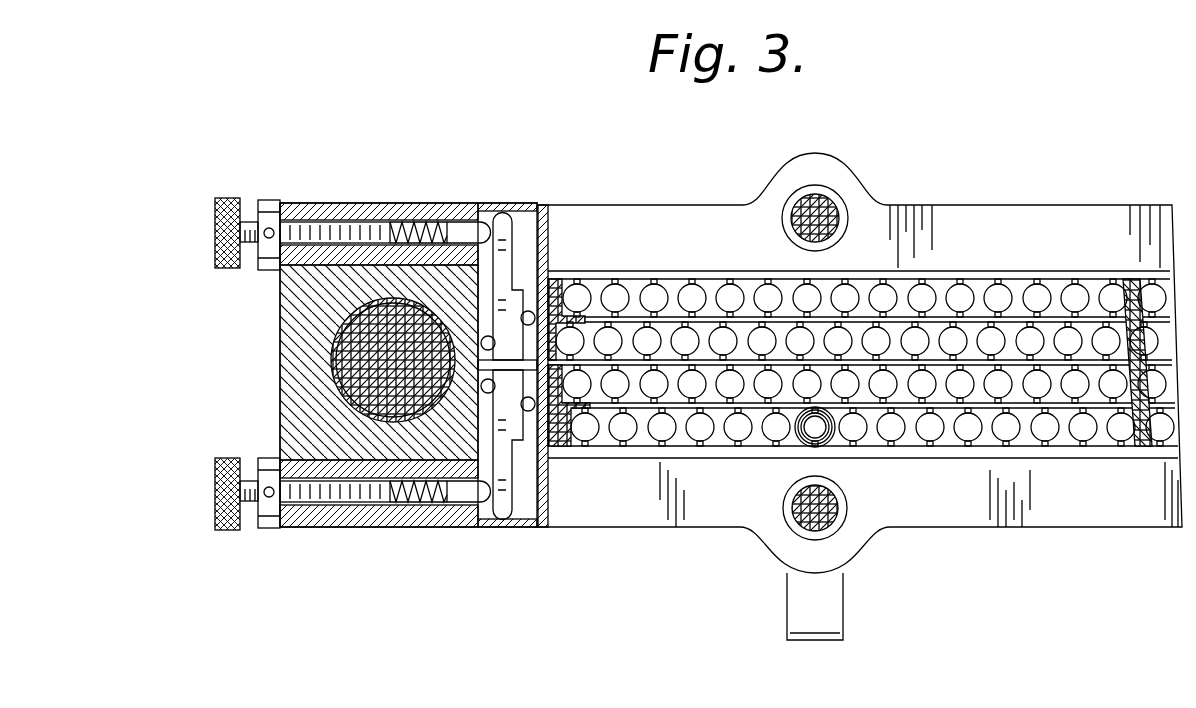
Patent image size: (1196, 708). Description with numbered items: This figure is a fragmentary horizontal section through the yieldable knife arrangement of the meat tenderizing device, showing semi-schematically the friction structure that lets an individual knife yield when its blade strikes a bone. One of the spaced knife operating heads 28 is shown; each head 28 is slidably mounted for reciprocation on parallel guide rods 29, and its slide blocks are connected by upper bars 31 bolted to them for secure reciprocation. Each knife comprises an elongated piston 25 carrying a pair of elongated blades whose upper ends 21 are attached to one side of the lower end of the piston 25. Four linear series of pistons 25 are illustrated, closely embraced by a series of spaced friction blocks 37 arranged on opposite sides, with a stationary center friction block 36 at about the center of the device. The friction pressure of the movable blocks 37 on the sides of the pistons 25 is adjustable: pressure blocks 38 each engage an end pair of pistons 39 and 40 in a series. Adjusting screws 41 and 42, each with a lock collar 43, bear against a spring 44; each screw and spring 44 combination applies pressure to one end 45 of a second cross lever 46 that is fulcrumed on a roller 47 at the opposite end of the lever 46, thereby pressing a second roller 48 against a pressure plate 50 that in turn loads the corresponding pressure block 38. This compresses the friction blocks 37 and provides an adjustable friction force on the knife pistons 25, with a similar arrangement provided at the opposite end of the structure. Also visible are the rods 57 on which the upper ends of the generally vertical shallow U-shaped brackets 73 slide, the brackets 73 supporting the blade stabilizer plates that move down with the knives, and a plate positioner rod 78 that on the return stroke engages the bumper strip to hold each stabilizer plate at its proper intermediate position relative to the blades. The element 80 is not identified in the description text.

The blade end 21 is at (950, 270).
The piston 25 is at (767, 296).
The knife operating head 28 is at (700, 537).
The guide rod 29 is at (342, 352).
The upper bar 31 is at (908, 214).
The center friction block 36 is at (1142, 440).
The friction block 37 is at (708, 280).
The pressure block 38 is at (547, 268).
The end piston 39 is at (568, 335).
The end piston 40 is at (572, 414).
The adjusting screw 41 is at (215, 228).
The adjusting screw 42 is at (215, 493).
The lock collar 43 is at (268, 200).
The spring 44 is at (418, 238).
The lever end 45 is at (500, 225).
The second cross lever 46 is at (490, 290).
The roller 47 is at (483, 345).
The second roller 48 is at (540, 265).
The pressure plate 50 is at (528, 311).
The rod 57 is at (818, 212).
The U-shaped bracket 73 is at (822, 625).
The plate positioner rod 78 is at (819, 432).
The marker ring 80 is at (811, 432).